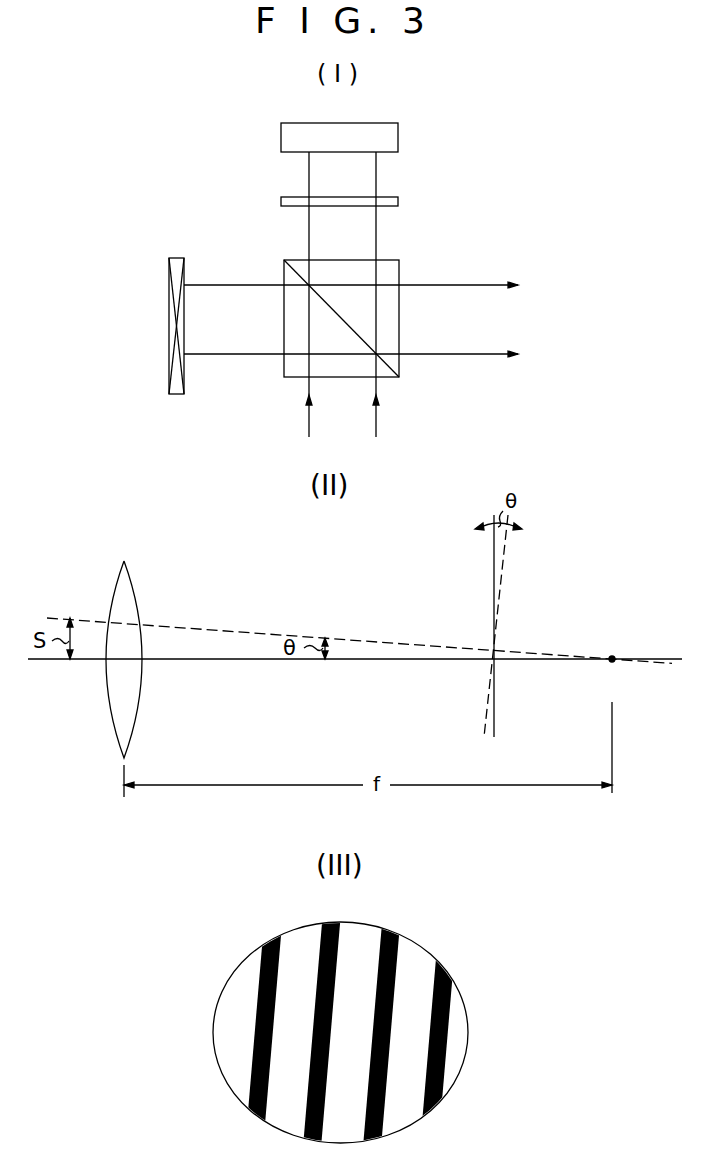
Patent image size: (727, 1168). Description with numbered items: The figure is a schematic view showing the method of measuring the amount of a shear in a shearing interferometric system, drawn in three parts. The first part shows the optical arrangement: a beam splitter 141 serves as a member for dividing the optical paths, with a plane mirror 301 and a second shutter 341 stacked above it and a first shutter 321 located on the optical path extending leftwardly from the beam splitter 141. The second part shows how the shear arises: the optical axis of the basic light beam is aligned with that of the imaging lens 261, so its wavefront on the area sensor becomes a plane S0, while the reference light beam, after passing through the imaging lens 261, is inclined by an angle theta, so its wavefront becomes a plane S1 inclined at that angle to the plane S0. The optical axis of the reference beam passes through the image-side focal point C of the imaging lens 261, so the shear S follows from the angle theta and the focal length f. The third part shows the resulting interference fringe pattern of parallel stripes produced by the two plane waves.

The plane mirror 301 is at (380, 129).
The second shutter 341 is at (389, 198).
The beam splitter 141 is at (394, 269).
The first shutter 321 is at (176, 262).
The imaging lens 261 is at (128, 589).
The plane S0 is at (493, 590).
The plane S1 is at (500, 590).
The focal point C is at (612, 674).